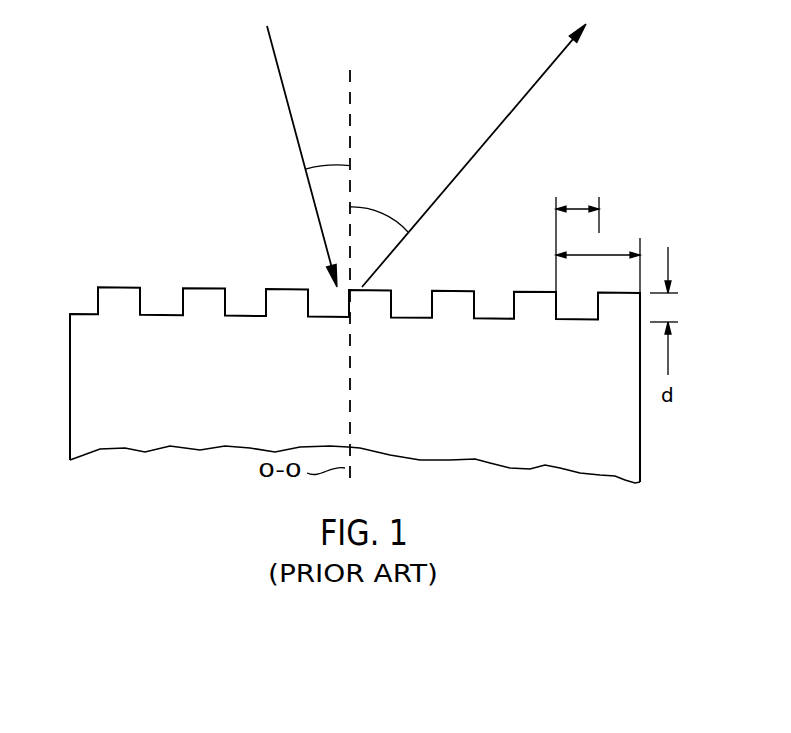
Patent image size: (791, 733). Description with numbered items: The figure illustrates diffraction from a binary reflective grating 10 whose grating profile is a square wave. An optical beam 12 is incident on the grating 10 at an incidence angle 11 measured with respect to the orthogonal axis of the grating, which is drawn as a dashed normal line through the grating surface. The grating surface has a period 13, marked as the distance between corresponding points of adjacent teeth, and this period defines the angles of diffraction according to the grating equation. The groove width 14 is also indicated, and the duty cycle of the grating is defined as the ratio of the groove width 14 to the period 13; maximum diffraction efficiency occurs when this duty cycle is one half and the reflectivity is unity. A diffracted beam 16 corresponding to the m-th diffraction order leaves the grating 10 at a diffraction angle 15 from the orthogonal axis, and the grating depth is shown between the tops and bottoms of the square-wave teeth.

The reflective grating 10 is at (87, 325).
The angle θ0 11 is at (318, 113).
The optical beam 12 is at (288, 105).
The period Λ 13 is at (628, 237).
The groove width L1 14 is at (596, 190).
The angle θm 15 is at (392, 168).
The diffracted beam 16 is at (499, 125).